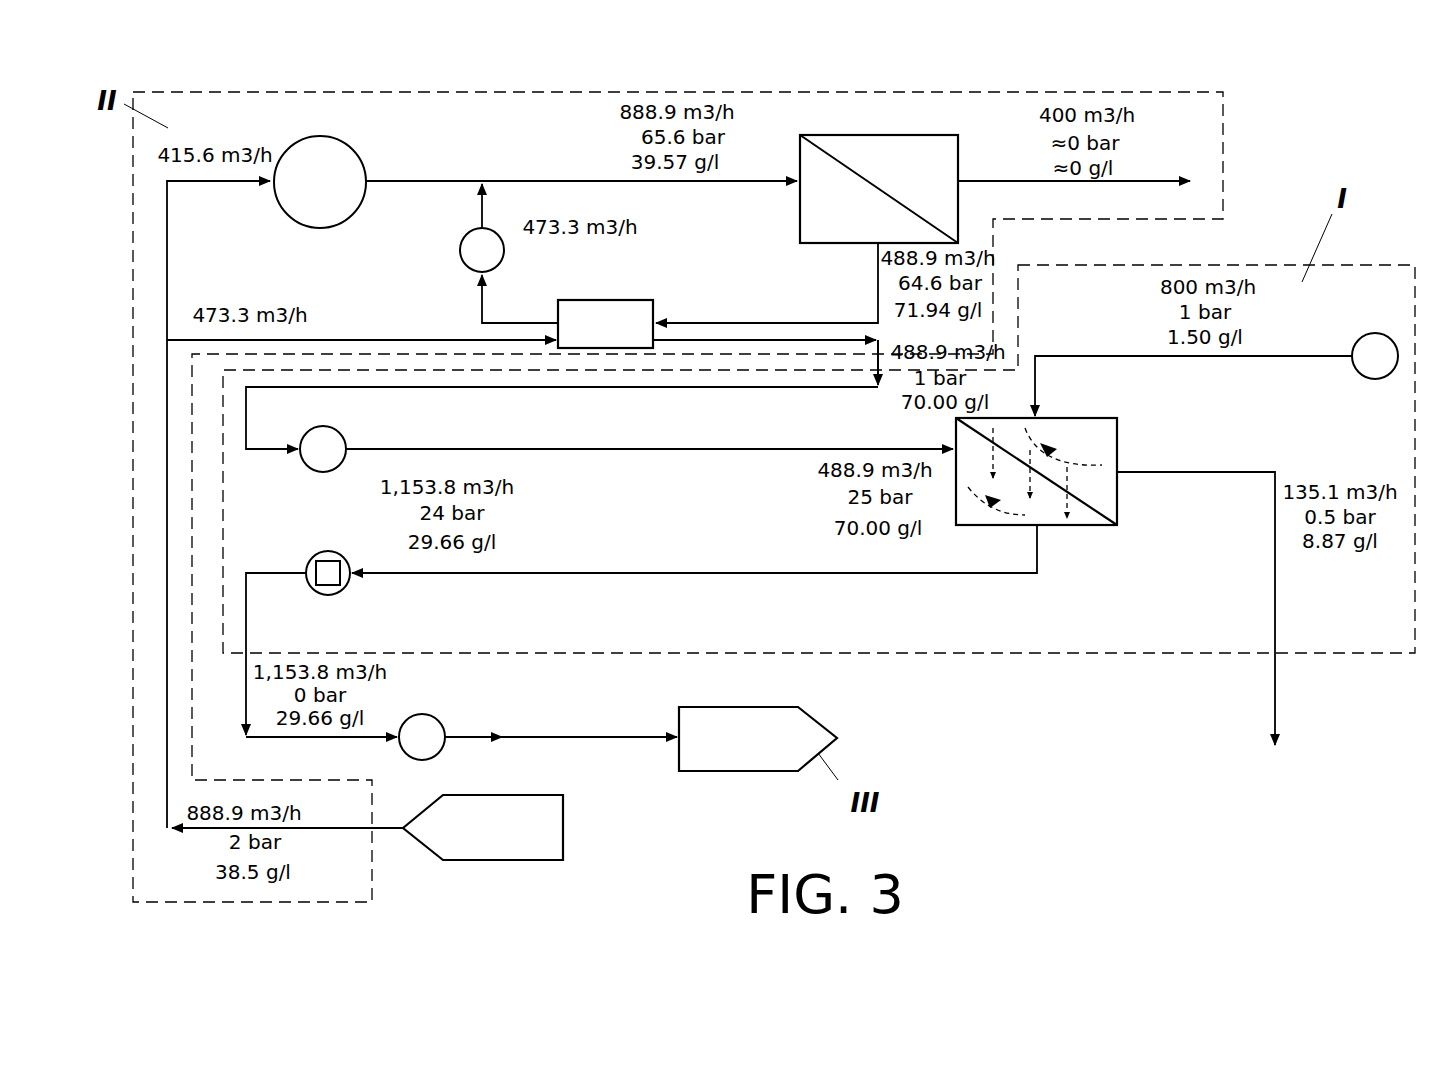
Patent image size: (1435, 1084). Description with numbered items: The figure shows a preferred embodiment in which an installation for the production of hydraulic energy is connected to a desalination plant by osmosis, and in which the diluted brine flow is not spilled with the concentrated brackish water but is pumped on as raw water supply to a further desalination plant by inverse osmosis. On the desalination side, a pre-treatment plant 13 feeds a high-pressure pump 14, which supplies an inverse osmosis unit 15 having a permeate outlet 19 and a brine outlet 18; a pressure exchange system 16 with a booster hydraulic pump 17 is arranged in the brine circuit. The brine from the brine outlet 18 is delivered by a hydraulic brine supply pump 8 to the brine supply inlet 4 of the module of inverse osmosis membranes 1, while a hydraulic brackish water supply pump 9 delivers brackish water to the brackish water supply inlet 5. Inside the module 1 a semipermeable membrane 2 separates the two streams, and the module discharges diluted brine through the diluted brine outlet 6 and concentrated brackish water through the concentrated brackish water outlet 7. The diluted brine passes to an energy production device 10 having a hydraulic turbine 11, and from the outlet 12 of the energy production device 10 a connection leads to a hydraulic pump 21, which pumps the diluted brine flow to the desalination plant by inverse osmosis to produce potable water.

The module of inverse osmosis membranes 1 is at (1095, 490).
The semipermeable membrane 2 is at (1090, 510).
The brine supply inlet 4 is at (955, 456).
The brackish water supply inlet 5 is at (1042, 414).
The diluted brine outlet 6 is at (1040, 530).
The concentrated brackish water outlet 7 is at (1120, 470).
The hydraulic brine supply pump 8 is at (345, 437).
The hydraulic brackish water supply pump 9 is at (1380, 333).
The energy production device 10 is at (319, 557).
The hydraulic turbine 11 is at (320, 558).
The outlet of the energy production device 12 is at (318, 584).
The pre-treatment plant 13 is at (503, 796).
The high-pressure pump 14 is at (359, 158).
The inverse osmosis unit 15 is at (836, 134).
The pressure exchange system 16 is at (632, 318).
The hydraulic pump (booster) 17 is at (464, 262).
The brine outlet 18 is at (872, 358).
The permeate outlet 19 is at (992, 180).
The hydraulic pump 21 is at (437, 722).